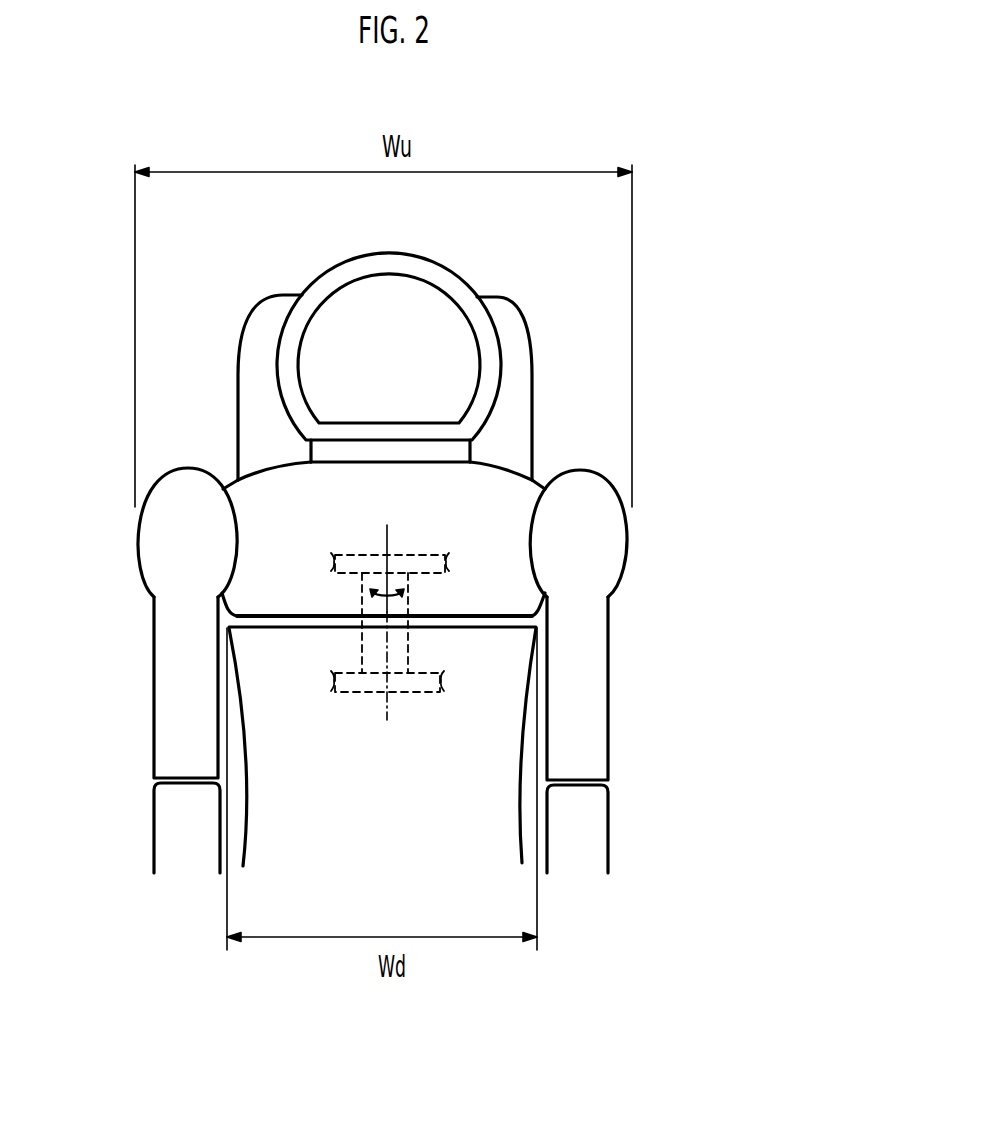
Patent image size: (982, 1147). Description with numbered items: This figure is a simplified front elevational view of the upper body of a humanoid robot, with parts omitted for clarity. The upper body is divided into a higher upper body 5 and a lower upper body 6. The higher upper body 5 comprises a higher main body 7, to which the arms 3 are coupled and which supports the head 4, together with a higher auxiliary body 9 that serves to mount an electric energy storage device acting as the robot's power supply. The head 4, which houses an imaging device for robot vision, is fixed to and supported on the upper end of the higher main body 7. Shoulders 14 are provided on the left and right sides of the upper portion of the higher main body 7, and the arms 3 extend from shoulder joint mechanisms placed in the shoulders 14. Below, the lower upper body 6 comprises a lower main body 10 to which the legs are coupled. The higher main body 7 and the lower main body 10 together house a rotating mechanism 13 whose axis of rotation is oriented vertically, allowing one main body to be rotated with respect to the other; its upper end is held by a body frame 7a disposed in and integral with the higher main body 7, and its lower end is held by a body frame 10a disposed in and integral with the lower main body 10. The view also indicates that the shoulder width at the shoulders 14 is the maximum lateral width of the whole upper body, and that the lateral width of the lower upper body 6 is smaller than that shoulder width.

The arms 3 is at (147, 710).
The head 4 is at (458, 268).
The higher upper body 5 is at (545, 454).
The lower upper body 6 is at (520, 782).
The higher main body 7 is at (483, 552).
The body frame 7a is at (420, 552).
The higher auxiliary body 9 is at (533, 358).
The lower main body 10 is at (478, 672).
The body frame 10a is at (350, 695).
The rotating mechanism 13 is at (420, 600).
The shoulders 14 is at (168, 525).